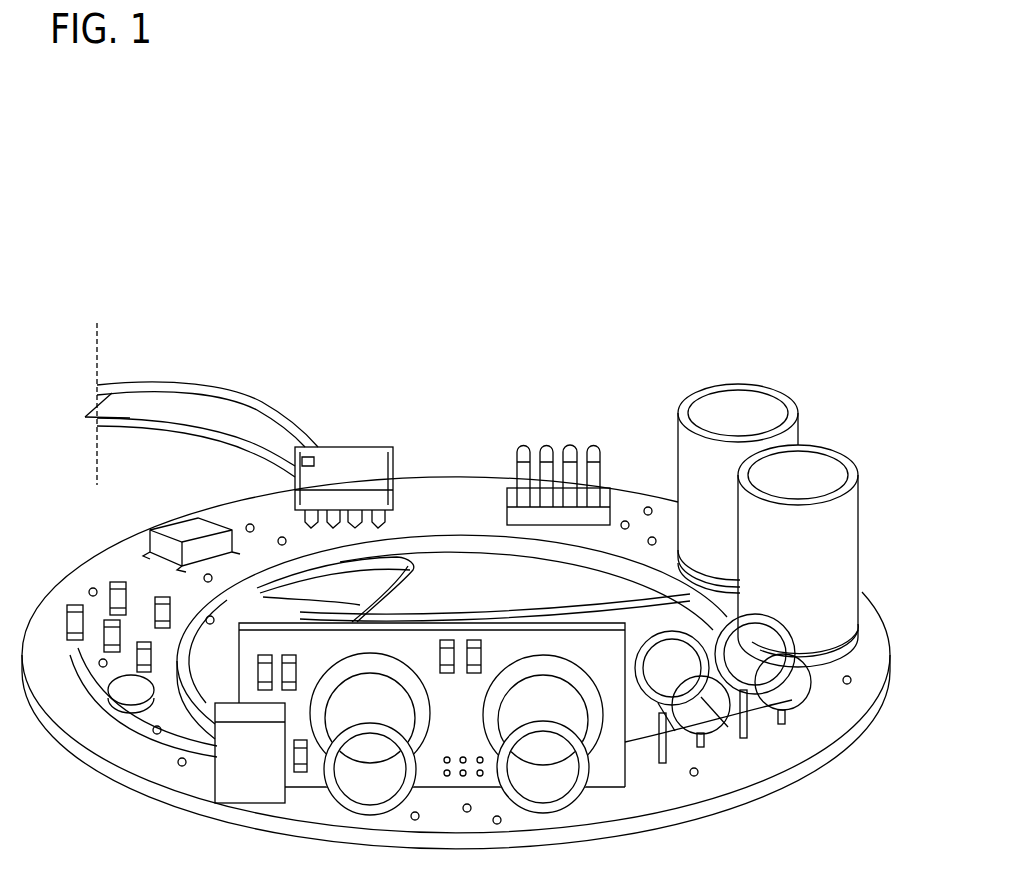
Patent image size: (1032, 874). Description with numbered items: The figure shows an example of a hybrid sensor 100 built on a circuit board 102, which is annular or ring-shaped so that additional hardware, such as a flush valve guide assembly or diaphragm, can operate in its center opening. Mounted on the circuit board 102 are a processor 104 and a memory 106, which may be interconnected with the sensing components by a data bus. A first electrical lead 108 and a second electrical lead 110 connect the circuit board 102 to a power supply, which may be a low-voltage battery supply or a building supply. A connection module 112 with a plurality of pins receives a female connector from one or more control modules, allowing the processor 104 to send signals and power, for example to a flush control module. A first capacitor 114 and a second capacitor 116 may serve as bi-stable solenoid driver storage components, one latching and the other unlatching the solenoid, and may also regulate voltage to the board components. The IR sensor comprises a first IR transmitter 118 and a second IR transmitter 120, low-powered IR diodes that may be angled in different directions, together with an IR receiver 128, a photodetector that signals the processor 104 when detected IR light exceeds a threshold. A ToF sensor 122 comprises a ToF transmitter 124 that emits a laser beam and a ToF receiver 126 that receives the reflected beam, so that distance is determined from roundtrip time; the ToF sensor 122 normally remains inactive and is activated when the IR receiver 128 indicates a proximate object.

The hybrid sensor 100 is at (203, 256).
The circuit board 102 is at (102, 562).
The processor 104 is at (163, 525).
The memory 106 is at (390, 453).
The first electrical lead 108 is at (235, 395).
The second electrical lead 110 is at (235, 440).
The connection module 112 is at (507, 500).
The first capacitor 114 is at (680, 427).
The second capacitor 116 is at (853, 490).
The first IR transmitter 118 is at (810, 693).
The second IR transmitter 120 is at (723, 718).
The ToF sensor 122 is at (625, 772).
The ToF transmitter 124 is at (343, 790).
The ToF receiver 126 is at (560, 790).
The IR receiver 128 is at (215, 787).